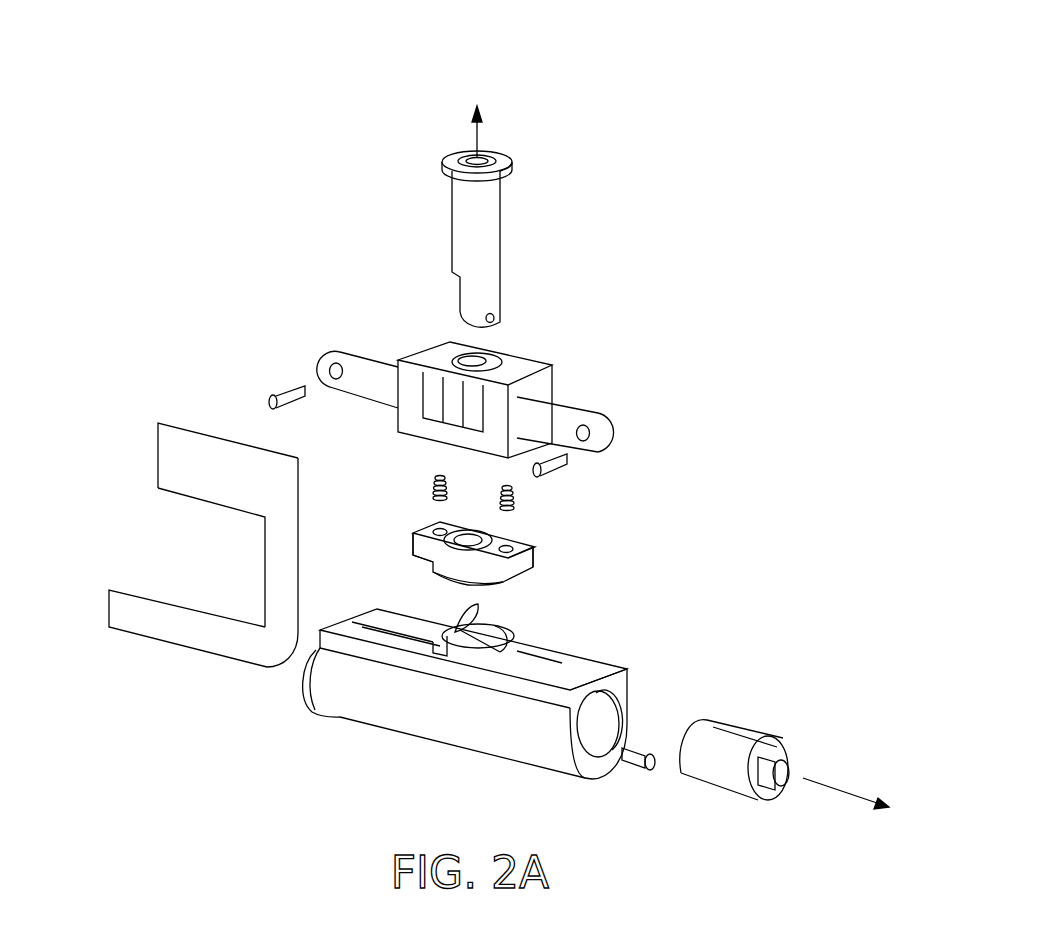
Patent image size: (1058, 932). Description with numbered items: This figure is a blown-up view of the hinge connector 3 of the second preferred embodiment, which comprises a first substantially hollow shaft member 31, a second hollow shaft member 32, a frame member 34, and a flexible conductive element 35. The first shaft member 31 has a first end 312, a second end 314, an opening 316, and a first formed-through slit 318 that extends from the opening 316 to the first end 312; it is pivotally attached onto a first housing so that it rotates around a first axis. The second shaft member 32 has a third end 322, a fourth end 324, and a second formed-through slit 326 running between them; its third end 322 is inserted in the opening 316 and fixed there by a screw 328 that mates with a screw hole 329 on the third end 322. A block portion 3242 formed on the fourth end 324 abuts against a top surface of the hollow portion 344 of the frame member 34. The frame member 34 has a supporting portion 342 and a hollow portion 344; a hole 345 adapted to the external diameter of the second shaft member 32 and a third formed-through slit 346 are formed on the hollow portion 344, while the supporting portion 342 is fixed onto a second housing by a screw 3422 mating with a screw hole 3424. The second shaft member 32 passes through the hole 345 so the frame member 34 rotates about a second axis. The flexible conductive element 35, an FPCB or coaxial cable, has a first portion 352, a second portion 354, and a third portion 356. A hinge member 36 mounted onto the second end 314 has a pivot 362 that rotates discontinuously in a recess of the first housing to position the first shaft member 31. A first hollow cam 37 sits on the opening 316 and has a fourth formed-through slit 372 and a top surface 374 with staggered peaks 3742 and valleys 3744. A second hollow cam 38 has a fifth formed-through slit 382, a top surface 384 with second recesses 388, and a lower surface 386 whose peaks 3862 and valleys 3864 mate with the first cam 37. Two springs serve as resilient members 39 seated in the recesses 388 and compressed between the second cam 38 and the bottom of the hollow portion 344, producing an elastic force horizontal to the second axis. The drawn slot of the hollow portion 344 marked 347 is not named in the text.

The hinge connector 3 is at (551, 86).
The first substantially hollow shaft member 31 is at (243, 697).
The first end 312 is at (300, 672).
The second end 314 is at (553, 737).
The opening 316 is at (458, 648).
The first formed-through slit 318 is at (382, 632).
The second hollow shaft member 32 is at (342, 98).
The third end 322 is at (470, 305).
The fourth end 324 is at (452, 192).
The second formed-through slit 326 is at (455, 162).
The screw hole 329 is at (484, 318).
The block portion 3242 is at (512, 176).
The screw 328 is at (646, 752).
The frame member 34 is at (597, 340).
The supporting portion 342 is at (366, 380).
The screw 3422 is at (279, 396).
The screw hole 3424 is at (337, 366).
The hollow portion 344 is at (397, 421).
The hole 345 is at (470, 356).
The third formed-through slit 346 is at (496, 357).
The slot of yoke 347 is at (428, 432).
The flexible conductive element 35 is at (62, 420).
The first portion 352 is at (139, 617).
The second portion 354 is at (275, 573).
The third portion 356 is at (167, 458).
The hinge member 36 is at (726, 742).
The pivot 362 is at (787, 747).
The first hollow cam 37 is at (528, 658).
The fourth formed-through slit 372 is at (447, 630).
The top surface 374 is at (520, 633).
The peaks 3742 is at (480, 625).
The valleys 3744 is at (455, 627).
The second hollow cam 38 is at (533, 558).
The fifth formed-through slit 382 is at (488, 537).
The top surface 384 is at (523, 548).
The lower surface 386 is at (427, 563).
The peaks 3862 is at (503, 579).
The valleys 3864 is at (447, 573).
The second recess 388 is at (434, 533).
The resilient member 39 is at (500, 490).